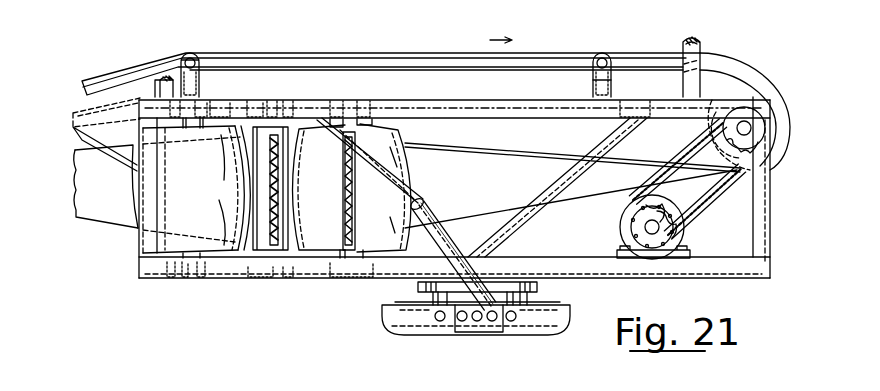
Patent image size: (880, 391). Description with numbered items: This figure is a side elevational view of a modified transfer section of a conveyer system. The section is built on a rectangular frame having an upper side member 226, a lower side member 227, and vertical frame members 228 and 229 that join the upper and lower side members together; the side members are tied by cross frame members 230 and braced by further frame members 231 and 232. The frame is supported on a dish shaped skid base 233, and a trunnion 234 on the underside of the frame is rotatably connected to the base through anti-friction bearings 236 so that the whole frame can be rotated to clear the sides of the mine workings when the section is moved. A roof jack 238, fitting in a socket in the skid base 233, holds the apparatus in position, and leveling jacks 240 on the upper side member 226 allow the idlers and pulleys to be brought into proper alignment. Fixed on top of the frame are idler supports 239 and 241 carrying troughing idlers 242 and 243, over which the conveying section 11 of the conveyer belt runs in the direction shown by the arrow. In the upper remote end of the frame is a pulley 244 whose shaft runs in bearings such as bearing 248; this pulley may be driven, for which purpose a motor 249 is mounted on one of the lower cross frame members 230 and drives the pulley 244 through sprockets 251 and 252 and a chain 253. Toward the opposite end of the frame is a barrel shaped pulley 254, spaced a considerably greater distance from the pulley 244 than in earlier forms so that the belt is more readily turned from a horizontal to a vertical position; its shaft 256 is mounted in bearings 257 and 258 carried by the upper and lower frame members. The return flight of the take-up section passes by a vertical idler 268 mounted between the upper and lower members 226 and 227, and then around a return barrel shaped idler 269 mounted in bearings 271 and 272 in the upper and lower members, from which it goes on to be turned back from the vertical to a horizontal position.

The conveying section of the conveyer belt 11 is at (367, 55).
The upper side member 226 is at (464, 105).
The lower side member 227 is at (228, 272).
The vertical frame member 228 is at (143, 236).
The vertical frame member 229 is at (762, 200).
The cross frame member 230 is at (638, 108).
The bracing frame member 231 is at (401, 229).
The bracing frame member 232 is at (621, 128).
The skid base 233 is at (517, 330).
The trunnion 234 is at (538, 288).
The anti-friction bearings 236 is at (400, 300).
The roof jack 238 is at (428, 201).
The idler support 239 is at (199, 90).
The leveling jack 240 is at (153, 88).
The idler support 241 is at (590, 80).
The troughing idler 242 is at (184, 56).
The troughing idler 243 is at (604, 52).
The pulley 244 is at (778, 115).
The bearing 248 is at (727, 124).
The motor 249 is at (690, 246).
The sprocket 251 is at (656, 201).
The sprocket 252 is at (750, 148).
The chain 253 is at (737, 178).
The barrel shaped pulley 254 is at (393, 134).
The shaft 256 is at (360, 122).
The bearing 257 is at (325, 108).
The bearing 258 is at (326, 265).
The vertical idler 268 is at (282, 168).
The return barrel shaped idler 269 is at (170, 238).
The bearing 271 is at (220, 106).
The bearing 272 is at (163, 273).